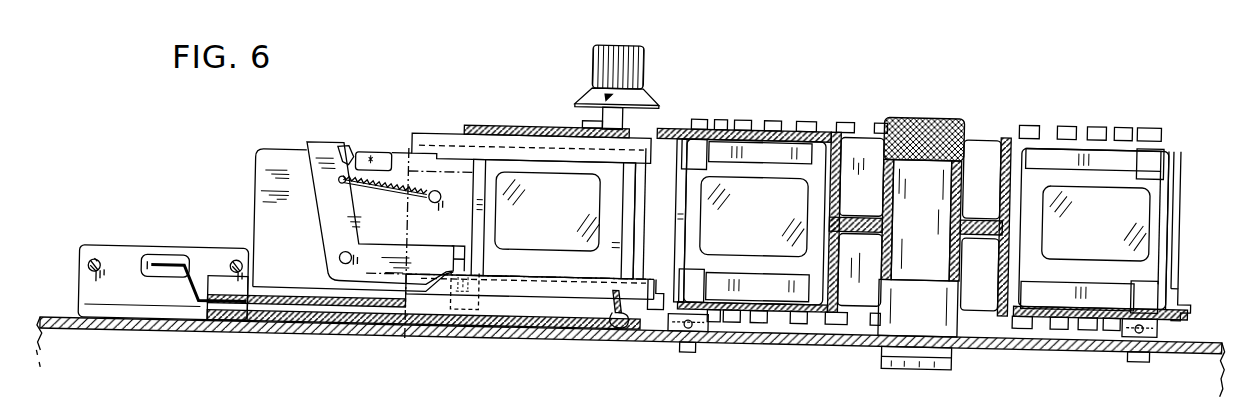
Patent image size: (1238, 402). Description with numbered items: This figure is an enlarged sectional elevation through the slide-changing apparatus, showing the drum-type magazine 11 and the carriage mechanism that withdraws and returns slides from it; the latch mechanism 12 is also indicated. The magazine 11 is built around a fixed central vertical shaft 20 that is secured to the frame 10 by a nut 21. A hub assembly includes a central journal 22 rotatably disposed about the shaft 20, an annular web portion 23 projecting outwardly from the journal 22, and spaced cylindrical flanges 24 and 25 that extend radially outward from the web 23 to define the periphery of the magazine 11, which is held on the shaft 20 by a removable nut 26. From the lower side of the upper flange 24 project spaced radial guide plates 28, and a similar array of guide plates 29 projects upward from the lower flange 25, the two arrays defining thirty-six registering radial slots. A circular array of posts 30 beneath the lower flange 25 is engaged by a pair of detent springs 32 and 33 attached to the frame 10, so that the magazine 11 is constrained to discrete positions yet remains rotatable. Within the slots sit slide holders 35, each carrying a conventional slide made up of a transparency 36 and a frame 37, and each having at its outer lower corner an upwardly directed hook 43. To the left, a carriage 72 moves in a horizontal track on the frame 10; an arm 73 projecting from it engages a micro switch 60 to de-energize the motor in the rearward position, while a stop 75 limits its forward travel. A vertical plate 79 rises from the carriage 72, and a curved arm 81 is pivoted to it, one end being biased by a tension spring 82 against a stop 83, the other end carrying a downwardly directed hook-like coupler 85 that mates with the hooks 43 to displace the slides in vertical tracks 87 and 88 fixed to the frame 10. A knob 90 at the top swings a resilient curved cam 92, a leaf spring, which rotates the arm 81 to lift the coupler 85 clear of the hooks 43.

The frame 10 is at (462, 329).
The drum-type magazine 11 is at (1004, 92).
The latch mechanism 12 is at (232, 204).
The fixed central vertical shaft 20 is at (929, 205).
The nut 21 is at (955, 348).
The central journal 22 is at (885, 262).
The annular web portion 23 is at (864, 204).
The upper flange 24 is at (788, 116).
The lower flange 25 is at (778, 297).
The removable nut 26 is at (922, 84).
The radial guide plates 28 is at (748, 127).
The guide plates 29 is at (758, 292).
The posts 30 is at (808, 308).
The detent spring 32 is at (676, 318).
The detent spring 33 is at (1150, 330).
The slide holders 35 is at (483, 176).
The transparency 36 is at (553, 204).
The frame 37 is at (1122, 243).
The hook 43 is at (416, 318).
The micro switch 60 is at (165, 246).
The carriage 72 is at (365, 300).
The arm 73 is at (183, 284).
The stop 75 is at (614, 314).
The vertical plate 79 is at (272, 146).
The curved arm 81 is at (326, 212).
The tension spring 82 is at (383, 185).
The stop 83 is at (372, 126).
The hook-like coupler 85 is at (488, 316).
The vertical track 87 is at (433, 126).
The vertical track 88 is at (545, 280).
The knob 90 is at (620, 62).
The resilient curved cam 92 is at (560, 117).